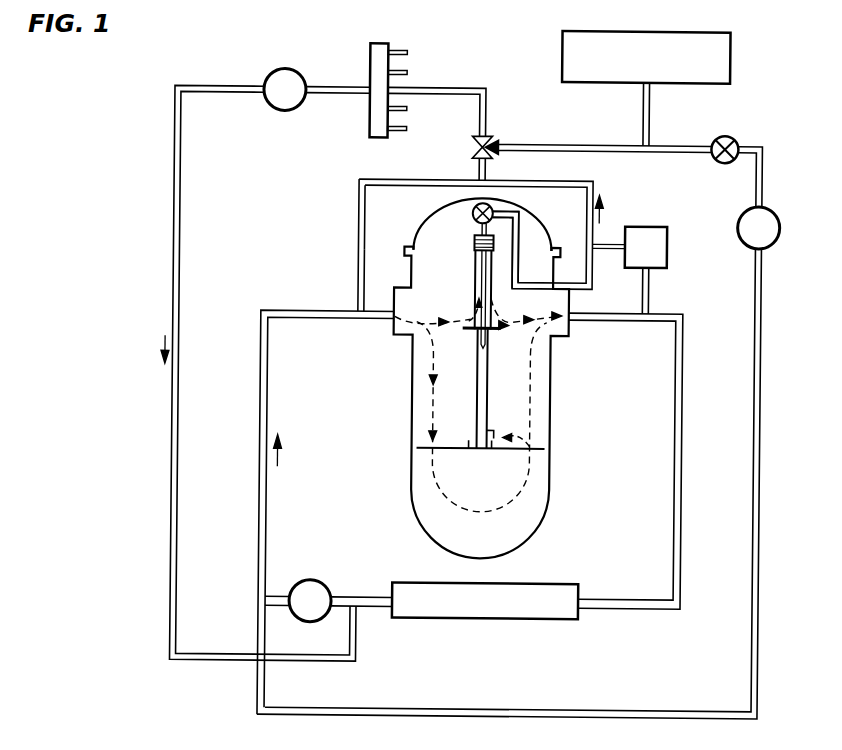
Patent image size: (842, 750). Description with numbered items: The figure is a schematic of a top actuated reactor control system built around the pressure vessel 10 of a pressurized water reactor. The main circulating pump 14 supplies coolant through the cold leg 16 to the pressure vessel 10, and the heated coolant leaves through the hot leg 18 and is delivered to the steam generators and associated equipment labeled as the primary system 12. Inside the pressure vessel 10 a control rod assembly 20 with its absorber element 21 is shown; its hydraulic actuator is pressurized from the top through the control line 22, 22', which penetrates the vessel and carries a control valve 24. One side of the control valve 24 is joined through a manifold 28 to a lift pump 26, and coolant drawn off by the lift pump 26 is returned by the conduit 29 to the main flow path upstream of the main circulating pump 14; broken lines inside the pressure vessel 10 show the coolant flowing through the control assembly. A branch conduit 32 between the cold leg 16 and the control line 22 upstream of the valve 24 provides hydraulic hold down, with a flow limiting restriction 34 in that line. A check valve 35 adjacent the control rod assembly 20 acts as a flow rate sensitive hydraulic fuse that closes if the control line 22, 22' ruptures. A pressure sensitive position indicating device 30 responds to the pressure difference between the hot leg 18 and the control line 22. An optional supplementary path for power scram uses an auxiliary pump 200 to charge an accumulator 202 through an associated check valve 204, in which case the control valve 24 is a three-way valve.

The pressure vessel 10 is at (405, 418).
The primary system 12 is at (476, 626).
The main circulating pump 14 is at (312, 581).
The cold leg 16 is at (260, 382).
The hot leg 18 is at (682, 432).
The control rod assembly 20 is at (495, 394).
The absorber element 21 is at (474, 274).
The control line 22 is at (481, 219).
The control line 22' is at (527, 250).
The control valve 24 is at (470, 147).
The lift pump 26 is at (271, 74).
The manifold 28 is at (367, 58).
The conduit 29 is at (172, 230).
The position indicating device 30 is at (664, 225).
The branch conduit 32 is at (357, 262).
The flow limiting restriction 34 is at (357, 232).
The check valve 35 is at (471, 216).
The auxiliary pump 200 is at (778, 224).
The accumulator 202 is at (674, 30).
The check valve 204 is at (731, 137).